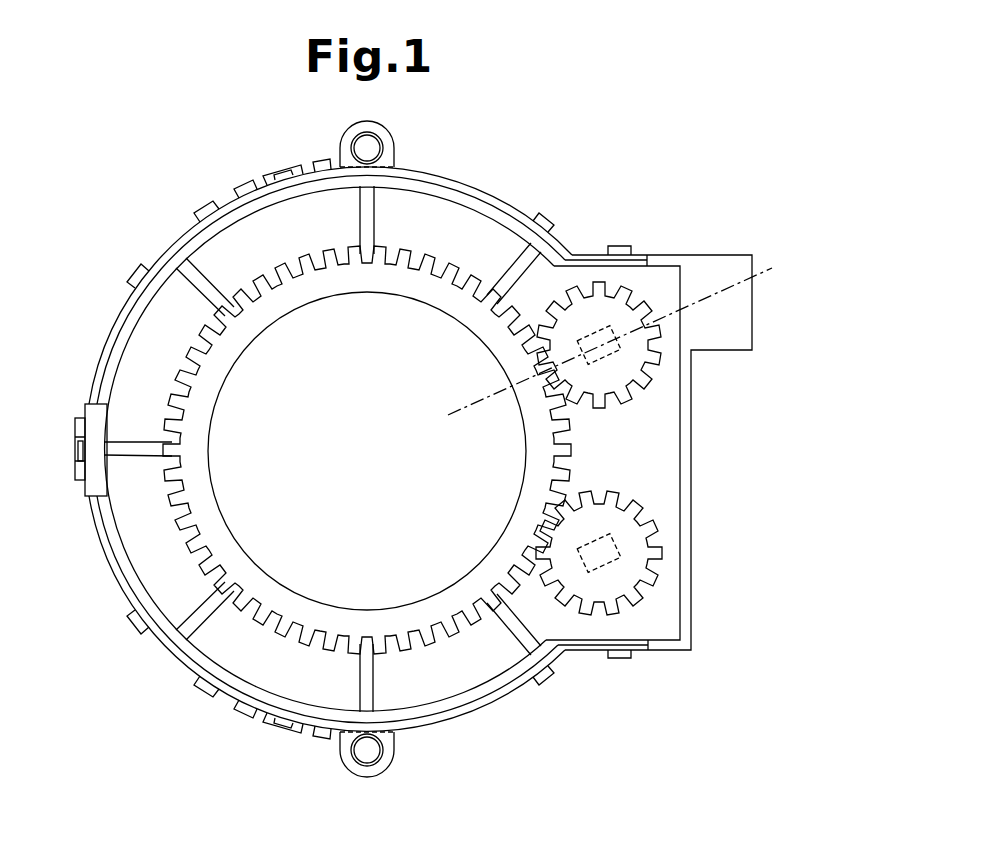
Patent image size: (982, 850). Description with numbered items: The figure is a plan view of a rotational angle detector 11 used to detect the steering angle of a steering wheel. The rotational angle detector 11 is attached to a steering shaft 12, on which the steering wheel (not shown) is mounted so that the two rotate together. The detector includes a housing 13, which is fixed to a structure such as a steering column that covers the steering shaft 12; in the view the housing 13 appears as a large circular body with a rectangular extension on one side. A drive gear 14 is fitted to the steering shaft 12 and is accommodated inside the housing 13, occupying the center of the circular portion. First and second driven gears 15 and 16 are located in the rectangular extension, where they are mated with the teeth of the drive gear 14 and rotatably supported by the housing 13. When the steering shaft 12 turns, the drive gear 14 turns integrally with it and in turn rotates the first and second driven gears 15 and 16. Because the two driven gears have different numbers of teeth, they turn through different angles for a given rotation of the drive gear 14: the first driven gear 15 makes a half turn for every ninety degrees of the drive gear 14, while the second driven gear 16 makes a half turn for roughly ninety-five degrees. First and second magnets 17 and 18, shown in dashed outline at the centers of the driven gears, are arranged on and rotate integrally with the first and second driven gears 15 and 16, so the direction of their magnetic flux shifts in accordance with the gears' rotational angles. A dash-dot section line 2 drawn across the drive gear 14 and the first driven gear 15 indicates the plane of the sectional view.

The rotational angle detector 11 is at (578, 180).
The steering shaft 12 is at (367, 433).
The housing 13 is at (118, 340).
The drive gear 14 is at (428, 257).
The first driven gear 15 is at (640, 304).
The second driven gear 16 is at (644, 588).
The first magnet 17 is at (612, 354).
The second magnet 18 is at (603, 538).
The section line II-II 2 is at (772, 268).